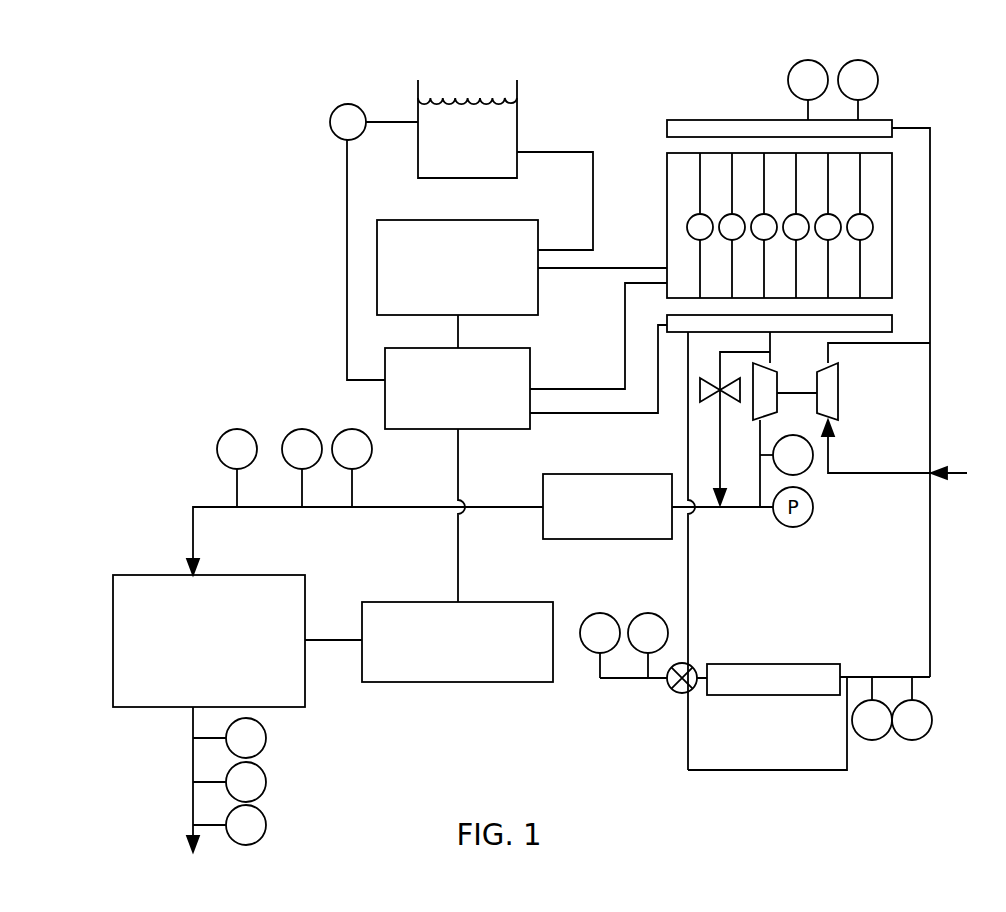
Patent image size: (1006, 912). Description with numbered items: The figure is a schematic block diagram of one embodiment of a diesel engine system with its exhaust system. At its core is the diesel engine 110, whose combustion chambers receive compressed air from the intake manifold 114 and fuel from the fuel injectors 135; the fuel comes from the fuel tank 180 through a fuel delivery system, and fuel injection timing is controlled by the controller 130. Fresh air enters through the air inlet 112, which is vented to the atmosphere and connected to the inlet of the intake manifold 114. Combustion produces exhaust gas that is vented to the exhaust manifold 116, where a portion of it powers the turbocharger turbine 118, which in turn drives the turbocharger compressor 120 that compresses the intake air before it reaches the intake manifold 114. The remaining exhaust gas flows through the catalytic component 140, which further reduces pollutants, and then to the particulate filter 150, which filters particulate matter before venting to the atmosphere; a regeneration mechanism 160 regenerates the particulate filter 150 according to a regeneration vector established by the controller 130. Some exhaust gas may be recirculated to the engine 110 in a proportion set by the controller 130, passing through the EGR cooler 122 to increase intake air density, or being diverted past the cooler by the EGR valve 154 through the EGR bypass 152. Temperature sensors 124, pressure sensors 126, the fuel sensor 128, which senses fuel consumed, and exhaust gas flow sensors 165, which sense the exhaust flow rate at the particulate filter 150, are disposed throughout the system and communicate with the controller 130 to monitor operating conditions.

The diesel engine 110 is at (873, 227).
The air inlet 112 is at (962, 476).
The intake manifold 114 is at (728, 120).
The exhaust manifold 116 is at (802, 333).
The turbocharger turbine 118 is at (755, 412).
The turbocharger compressor 120 is at (833, 388).
The EGR cooler 122 is at (767, 695).
The temperature sensors 124 is at (797, 63).
The pressure sensors 126 is at (878, 80).
The fuel sensor 128 is at (348, 104).
The controller 130 is at (441, 412).
The fuel injectors 135 is at (475, 291).
The catalytic component 140 is at (612, 540).
The particulate filter 150 is at (192, 666).
The EGR bypass 152 is at (775, 770).
The EGR valve 154 is at (672, 690).
The regeneration mechanism 160 is at (441, 679).
The exhaust gas flow sensors 165 is at (237, 429).
The fuel tank 180 is at (418, 131).